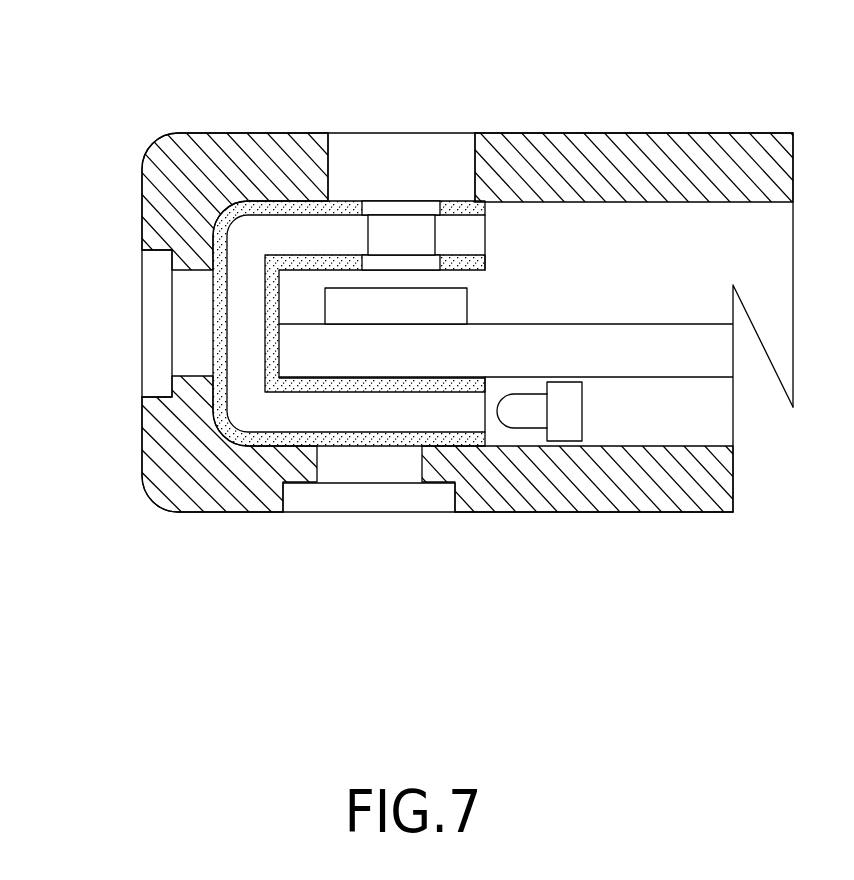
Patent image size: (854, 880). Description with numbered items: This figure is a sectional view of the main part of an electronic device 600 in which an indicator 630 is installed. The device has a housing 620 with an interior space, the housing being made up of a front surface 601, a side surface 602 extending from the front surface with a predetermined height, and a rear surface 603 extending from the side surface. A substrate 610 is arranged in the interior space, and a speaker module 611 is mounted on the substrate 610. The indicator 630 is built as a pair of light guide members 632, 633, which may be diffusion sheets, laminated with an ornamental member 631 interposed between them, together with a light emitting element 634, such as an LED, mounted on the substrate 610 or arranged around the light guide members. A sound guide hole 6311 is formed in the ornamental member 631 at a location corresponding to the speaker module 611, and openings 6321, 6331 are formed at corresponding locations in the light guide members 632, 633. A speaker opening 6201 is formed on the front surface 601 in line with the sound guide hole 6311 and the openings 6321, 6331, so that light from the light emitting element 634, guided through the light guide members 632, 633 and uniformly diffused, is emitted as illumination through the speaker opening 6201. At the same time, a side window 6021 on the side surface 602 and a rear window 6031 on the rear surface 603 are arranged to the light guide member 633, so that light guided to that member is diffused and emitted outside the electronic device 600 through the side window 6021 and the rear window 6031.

The electronic device 600 is at (437, 312).
The front surface 601 is at (437, 312).
The speaker opening 6201 is at (463, 160).
The housing 620 is at (660, 162).
The side surface 602 is at (237, 382).
The side window 6021 is at (155, 316).
The rear surface 603 is at (536, 530).
The rear window 6031 is at (382, 500).
The substrate 610 is at (700, 378).
The speaker module 611 is at (344, 302).
The indicator 630 is at (368, 317).
The ornamental member 631 is at (323, 317).
The sound guide hole 6311 is at (393, 233).
The light guide member 632 is at (323, 426).
The opening 6321 is at (428, 262).
The light guide member 633 is at (349, 333).
The opening 6331 is at (422, 210).
The light emitting element 634 is at (565, 425).